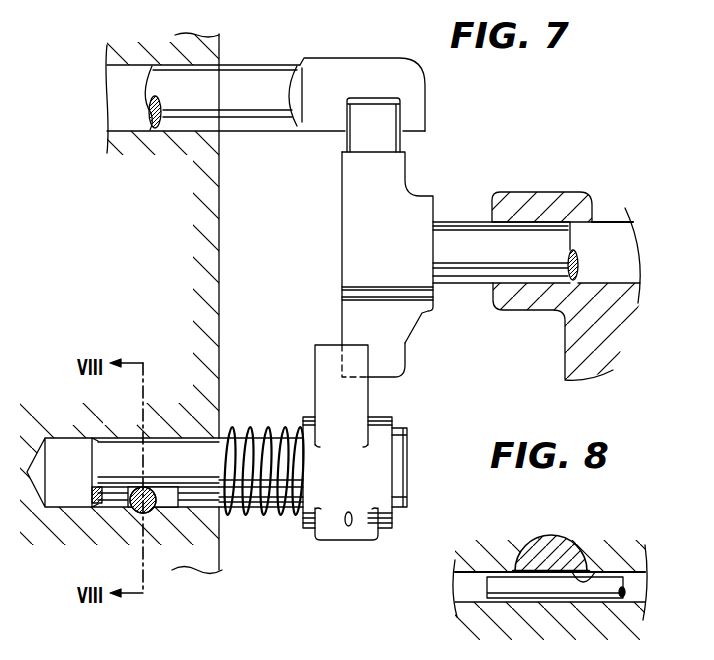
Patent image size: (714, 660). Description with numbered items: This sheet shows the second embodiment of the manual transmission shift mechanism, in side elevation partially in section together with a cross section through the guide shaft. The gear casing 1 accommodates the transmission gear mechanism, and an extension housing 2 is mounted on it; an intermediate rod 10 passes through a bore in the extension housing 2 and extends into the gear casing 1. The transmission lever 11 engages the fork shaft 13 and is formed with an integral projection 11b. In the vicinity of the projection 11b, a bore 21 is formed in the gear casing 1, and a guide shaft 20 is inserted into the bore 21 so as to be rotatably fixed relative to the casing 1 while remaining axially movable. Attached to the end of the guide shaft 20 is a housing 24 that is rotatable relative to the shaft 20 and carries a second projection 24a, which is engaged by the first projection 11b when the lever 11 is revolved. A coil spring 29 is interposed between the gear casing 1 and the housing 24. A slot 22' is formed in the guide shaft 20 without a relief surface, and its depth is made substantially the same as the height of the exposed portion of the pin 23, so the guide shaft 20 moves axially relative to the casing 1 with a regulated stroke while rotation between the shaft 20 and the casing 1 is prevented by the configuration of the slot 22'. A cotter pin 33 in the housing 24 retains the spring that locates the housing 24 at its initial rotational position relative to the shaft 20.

In FIG. 7, the gear casing 1 is at (219, 558).
In FIG. 7, the extension housing 2 is at (533, 197).
In FIG. 7, the intermediate rod 10 is at (457, 278).
In FIG. 7, the transmission lever 11 is at (343, 233).
In FIG. 7, the projection 11b is at (405, 366).
In FIG. 7, the fork shaft 13 is at (323, 68).
In FIG. 7, the guide shaft 20 is at (120, 447).
In FIG. 8, the guide shaft 20 is at (547, 523).
In FIG. 7, the bore 21 is at (67, 447).
In FIG. 7, the slot 22' is at (163, 518).
In FIG. 8, the slot 22' is at (602, 553).
In FIG. 7, the pin 23 is at (136, 512).
In FIG. 8, the pin 23 is at (592, 598).
In FIG. 7, the housing 24 is at (362, 402).
In FIG. 7, the second projection 24a is at (315, 353).
In FIG. 7, the coil spring 29 is at (270, 433).
In FIG. 7, the cotter pin 33 is at (348, 527).